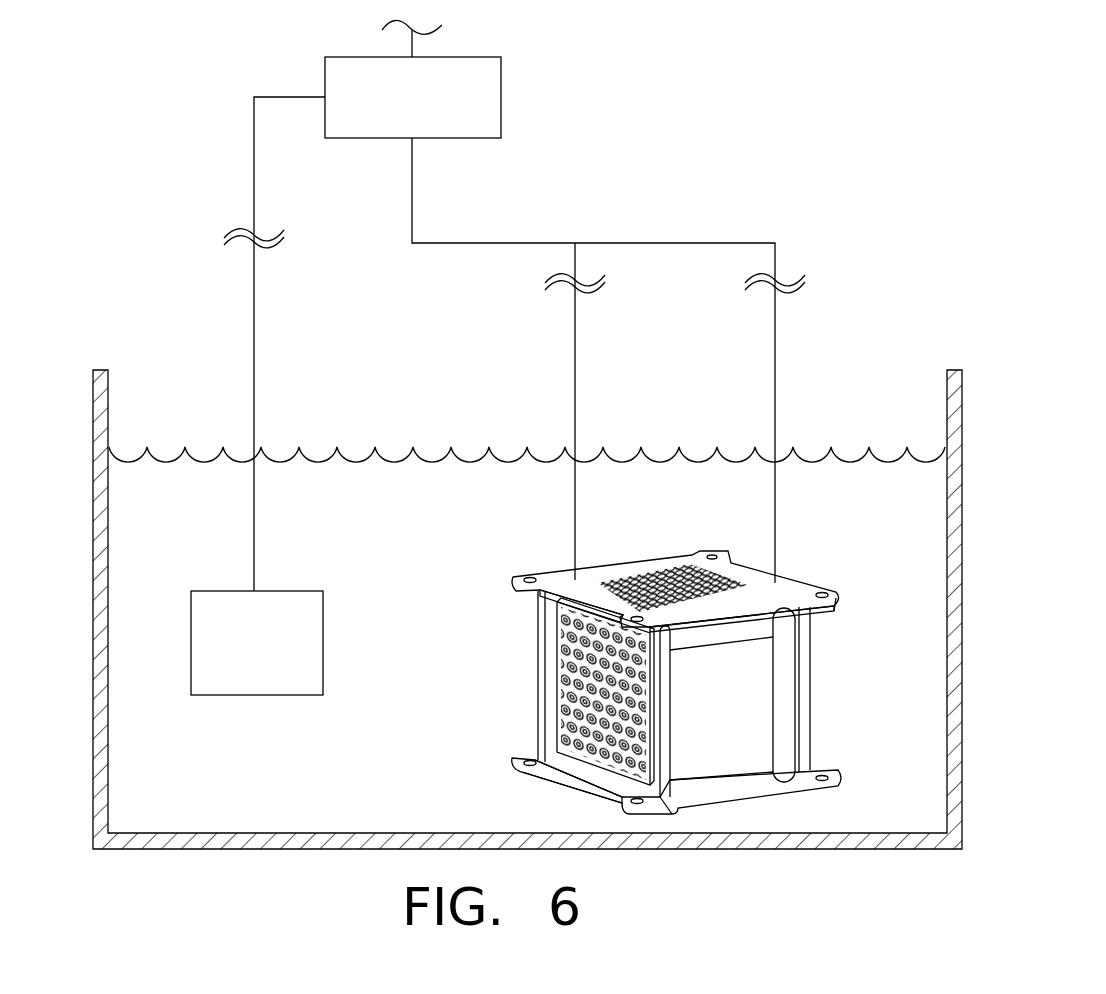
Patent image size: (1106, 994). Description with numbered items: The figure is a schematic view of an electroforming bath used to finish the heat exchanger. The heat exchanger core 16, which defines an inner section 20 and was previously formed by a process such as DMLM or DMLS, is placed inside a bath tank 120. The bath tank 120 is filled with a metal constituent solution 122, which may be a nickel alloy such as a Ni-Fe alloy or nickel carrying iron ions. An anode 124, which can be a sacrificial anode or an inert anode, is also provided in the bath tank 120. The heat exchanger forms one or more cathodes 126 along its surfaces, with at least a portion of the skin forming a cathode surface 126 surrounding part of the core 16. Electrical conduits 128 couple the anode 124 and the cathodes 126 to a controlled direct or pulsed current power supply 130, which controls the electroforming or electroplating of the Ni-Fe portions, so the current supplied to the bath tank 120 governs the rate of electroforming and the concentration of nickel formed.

The heat exchanger core 16 is at (766, 689).
The inner section 20 is at (807, 697).
The bath tank 120 is at (962, 413).
The metal constituent solution 122 is at (813, 460).
The anode 124 is at (323, 650).
The cathode 126 is at (588, 580).
The electrical conduits 128 is at (254, 145).
The power supply 130 is at (501, 88).